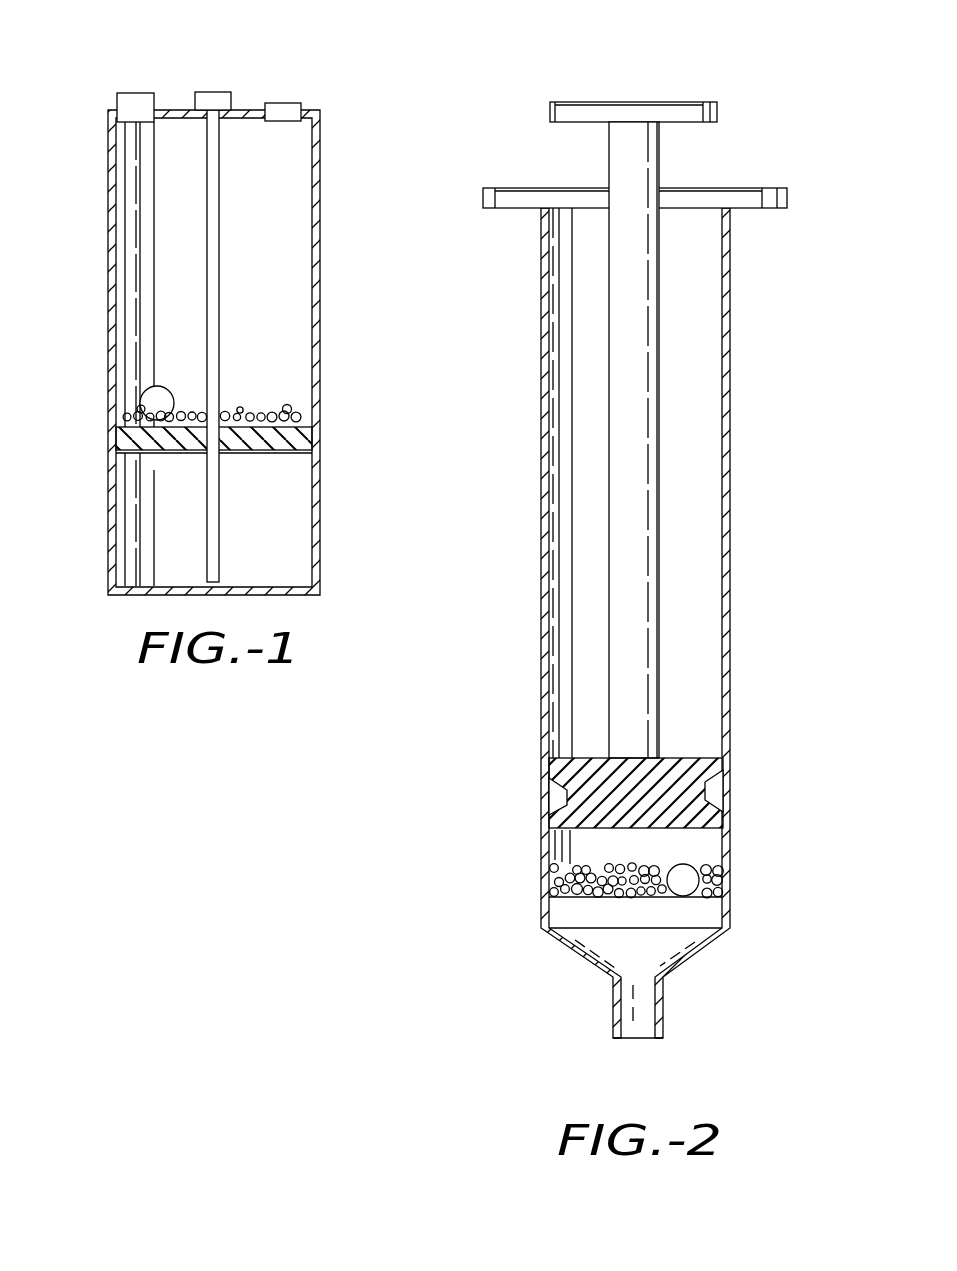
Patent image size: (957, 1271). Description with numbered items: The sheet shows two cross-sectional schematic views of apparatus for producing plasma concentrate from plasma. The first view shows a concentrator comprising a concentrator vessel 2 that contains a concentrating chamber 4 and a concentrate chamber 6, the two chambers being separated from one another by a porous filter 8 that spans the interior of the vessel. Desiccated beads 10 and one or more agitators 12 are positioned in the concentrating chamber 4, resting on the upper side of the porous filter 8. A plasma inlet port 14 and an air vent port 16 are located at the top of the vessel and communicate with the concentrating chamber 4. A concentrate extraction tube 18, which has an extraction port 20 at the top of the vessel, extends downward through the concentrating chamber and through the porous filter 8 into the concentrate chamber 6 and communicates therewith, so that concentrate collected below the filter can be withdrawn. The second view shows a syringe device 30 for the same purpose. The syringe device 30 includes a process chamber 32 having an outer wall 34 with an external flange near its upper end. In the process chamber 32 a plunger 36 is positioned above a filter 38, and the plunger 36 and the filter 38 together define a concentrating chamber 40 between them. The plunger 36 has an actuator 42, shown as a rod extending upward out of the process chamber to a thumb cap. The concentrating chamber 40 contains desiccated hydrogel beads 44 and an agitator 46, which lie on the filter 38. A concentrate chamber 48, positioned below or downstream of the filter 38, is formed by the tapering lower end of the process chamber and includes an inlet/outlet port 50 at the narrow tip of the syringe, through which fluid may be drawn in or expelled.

In FIG. 1, the concentrator vessel 2 is at (321, 290).
In FIG. 1, the concentrating chamber 4 is at (140, 272).
In FIG. 1, the concentrate chamber 6 is at (148, 525).
In FIG. 1, the porous filter 8 is at (300, 441).
In FIG. 1, the desiccated beads 10 is at (266, 412).
In FIG. 1, the agitator 12 is at (140, 393).
In FIG. 1, the plasma inlet port 14 is at (130, 93).
In FIG. 1, the air vent port 16 is at (290, 103).
In FIG. 1, the concentrate extraction tube 18 is at (222, 218).
In FIG. 1, the extraction port 20 is at (212, 92).
In FIG. 2, the syringe device 30 is at (757, 326).
In FIG. 2, the process chamber 32 is at (703, 412).
In FIG. 2, the outer wall 34 is at (732, 268).
In FIG. 2, the plunger 36 is at (705, 768).
In FIG. 2, the filter 38 is at (712, 918).
In FIG. 2, the concentrating chamber 40 is at (712, 840).
In FIG. 2, the actuator 42 is at (662, 165).
In FIG. 2, the desiccated hydrogel beads 44 is at (555, 885).
In FIG. 2, the agitator 46 is at (690, 883).
In FIG. 2, the concentrate chamber 48 is at (677, 940).
In FIG. 2, the inlet/outlet port 50 is at (664, 1022).